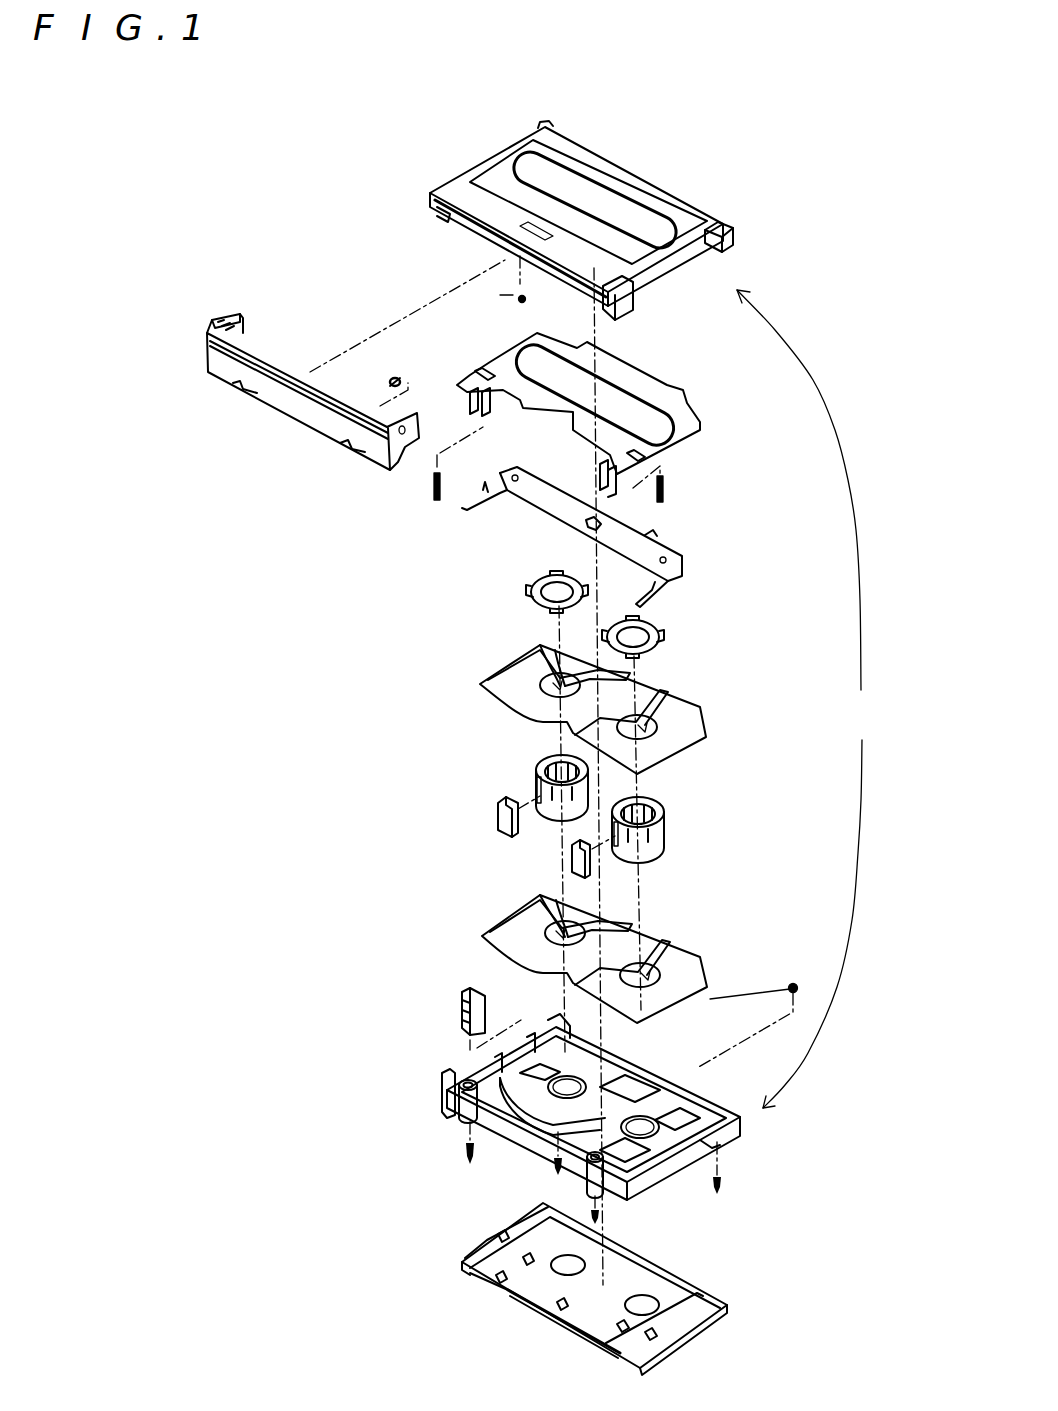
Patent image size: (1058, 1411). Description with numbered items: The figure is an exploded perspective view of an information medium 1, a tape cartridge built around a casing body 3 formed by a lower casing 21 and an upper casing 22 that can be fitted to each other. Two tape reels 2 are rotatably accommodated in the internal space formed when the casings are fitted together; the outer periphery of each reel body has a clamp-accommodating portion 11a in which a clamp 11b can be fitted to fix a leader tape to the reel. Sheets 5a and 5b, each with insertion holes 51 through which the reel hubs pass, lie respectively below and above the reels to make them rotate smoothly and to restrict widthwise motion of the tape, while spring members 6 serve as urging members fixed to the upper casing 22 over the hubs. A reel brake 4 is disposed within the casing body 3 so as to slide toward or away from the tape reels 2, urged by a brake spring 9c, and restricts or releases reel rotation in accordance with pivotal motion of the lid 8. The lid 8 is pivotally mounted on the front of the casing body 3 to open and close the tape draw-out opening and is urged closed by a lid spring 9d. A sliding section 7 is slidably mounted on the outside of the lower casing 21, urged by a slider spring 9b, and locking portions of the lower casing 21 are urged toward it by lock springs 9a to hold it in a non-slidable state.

The information medium 1 is at (356, 143).
The tape reel 2 is at (537, 770).
The casing body 3 is at (802, 699).
The reel brake 4 is at (686, 571).
The sheet 5a is at (706, 972).
The sheet 5b is at (704, 722).
The spring member 6 is at (531, 588).
The sliding section 7 is at (683, 1283).
The lid 8 is at (293, 408).
The lock spring 9a is at (432, 490).
The slider spring 9b is at (794, 984).
The brake spring 9c is at (518, 300).
The lid spring 9d is at (400, 376).
The clamp-accommodating portion 11a is at (550, 813).
The clamp 11b is at (576, 864).
The lower casing 21 is at (440, 1104).
The upper casing 22 is at (684, 192).
The insertion hole 51 is at (543, 648).